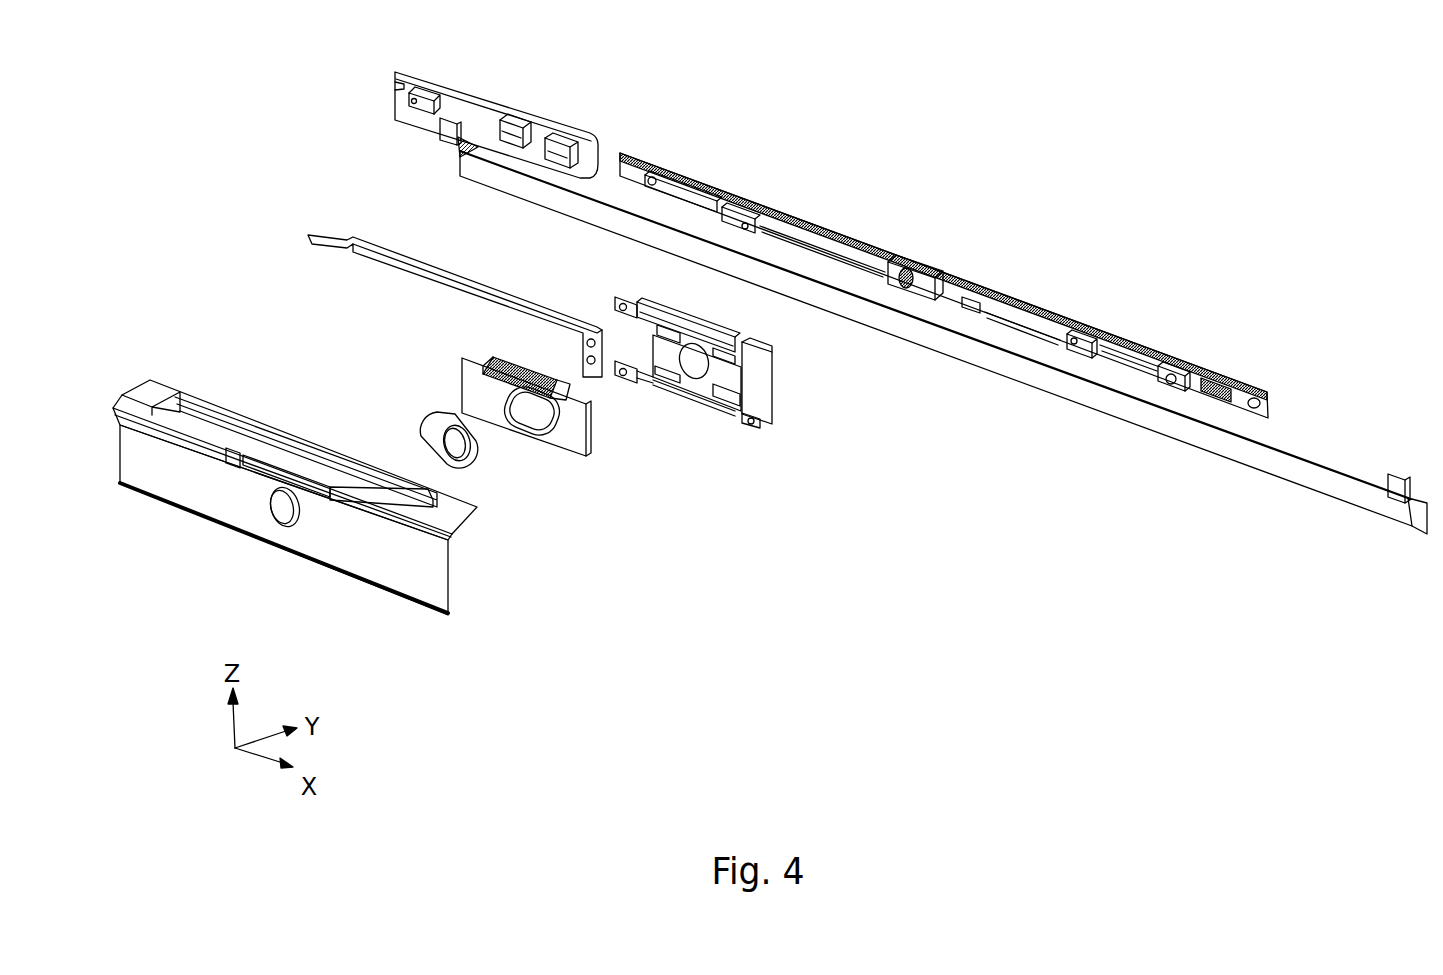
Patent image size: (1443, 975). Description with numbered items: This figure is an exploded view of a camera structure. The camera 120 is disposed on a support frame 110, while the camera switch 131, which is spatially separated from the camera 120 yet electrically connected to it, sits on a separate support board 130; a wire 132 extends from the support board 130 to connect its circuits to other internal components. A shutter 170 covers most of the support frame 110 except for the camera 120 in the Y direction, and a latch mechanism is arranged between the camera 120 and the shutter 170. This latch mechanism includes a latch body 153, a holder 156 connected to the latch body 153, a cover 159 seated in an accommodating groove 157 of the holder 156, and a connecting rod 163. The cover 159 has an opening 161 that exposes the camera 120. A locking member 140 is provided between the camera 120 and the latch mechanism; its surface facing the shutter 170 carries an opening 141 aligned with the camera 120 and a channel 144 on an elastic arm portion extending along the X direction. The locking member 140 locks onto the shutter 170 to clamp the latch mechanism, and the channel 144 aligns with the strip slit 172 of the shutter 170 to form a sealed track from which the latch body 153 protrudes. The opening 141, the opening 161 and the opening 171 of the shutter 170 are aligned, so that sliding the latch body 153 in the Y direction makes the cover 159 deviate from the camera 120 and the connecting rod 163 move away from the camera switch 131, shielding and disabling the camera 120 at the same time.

The support frame 110 is at (1230, 383).
The camera 120 is at (962, 285).
The support board 130 is at (514, 97).
The camera switch 131 is at (560, 128).
The wire 132 is at (1324, 480).
The locking member 140 is at (705, 360).
The opening 141 is at (698, 380).
The channel 144 is at (683, 316).
The latch body 153 is at (498, 356).
The holder 156 is at (543, 418).
The accommodating groove 157 is at (550, 442).
The cover 159 is at (440, 451).
The opening 161 is at (468, 465).
The connecting rod 163 is at (318, 232).
The shutter 170 is at (267, 483).
The opening 171 is at (292, 530).
The slit 172 is at (247, 473).